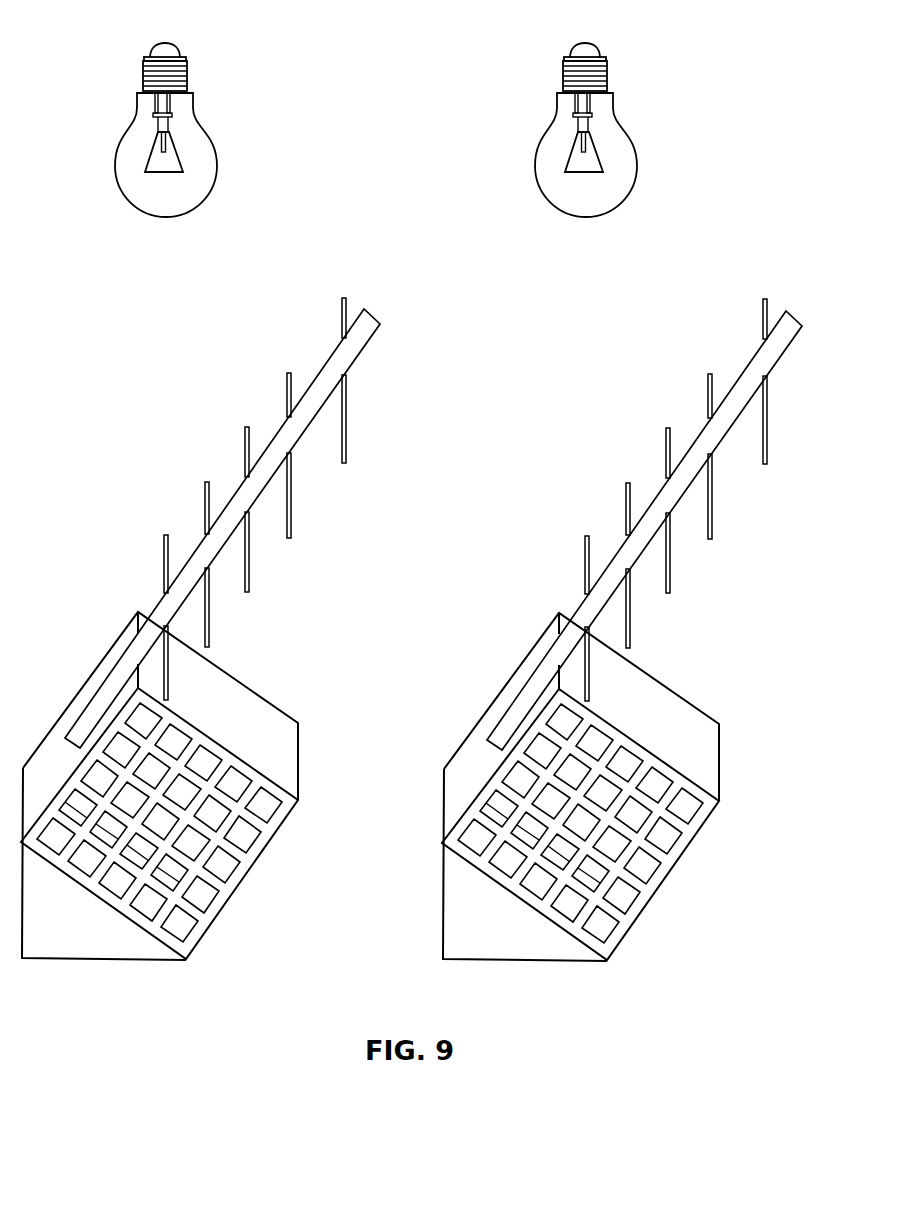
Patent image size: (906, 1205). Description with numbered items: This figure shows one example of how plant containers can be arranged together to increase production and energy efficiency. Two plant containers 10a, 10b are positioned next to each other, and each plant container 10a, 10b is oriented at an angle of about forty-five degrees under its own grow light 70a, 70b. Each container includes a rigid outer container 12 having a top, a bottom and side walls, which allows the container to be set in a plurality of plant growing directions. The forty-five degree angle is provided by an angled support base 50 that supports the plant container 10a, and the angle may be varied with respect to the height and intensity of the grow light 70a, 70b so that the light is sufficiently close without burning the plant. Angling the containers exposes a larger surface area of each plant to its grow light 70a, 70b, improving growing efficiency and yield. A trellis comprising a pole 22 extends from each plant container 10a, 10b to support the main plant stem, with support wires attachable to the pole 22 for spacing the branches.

The grow light 70b is at (144, 191).
The grow light 70a is at (554, 193).
The plant container 10b is at (107, 410).
The plant container 10a is at (556, 645).
The pole 22 is at (662, 494).
The rigid outer container 12 is at (617, 872).
The angled support base 50 is at (452, 920).